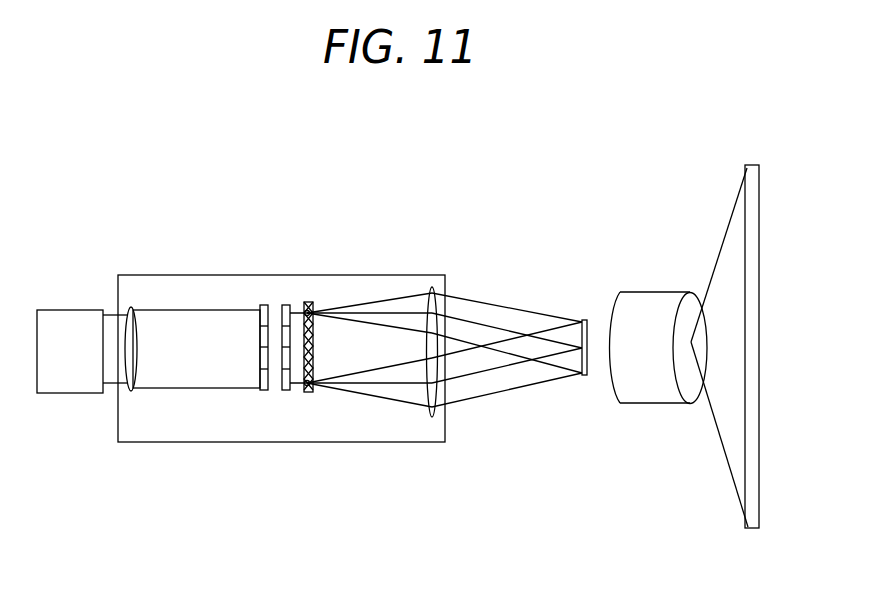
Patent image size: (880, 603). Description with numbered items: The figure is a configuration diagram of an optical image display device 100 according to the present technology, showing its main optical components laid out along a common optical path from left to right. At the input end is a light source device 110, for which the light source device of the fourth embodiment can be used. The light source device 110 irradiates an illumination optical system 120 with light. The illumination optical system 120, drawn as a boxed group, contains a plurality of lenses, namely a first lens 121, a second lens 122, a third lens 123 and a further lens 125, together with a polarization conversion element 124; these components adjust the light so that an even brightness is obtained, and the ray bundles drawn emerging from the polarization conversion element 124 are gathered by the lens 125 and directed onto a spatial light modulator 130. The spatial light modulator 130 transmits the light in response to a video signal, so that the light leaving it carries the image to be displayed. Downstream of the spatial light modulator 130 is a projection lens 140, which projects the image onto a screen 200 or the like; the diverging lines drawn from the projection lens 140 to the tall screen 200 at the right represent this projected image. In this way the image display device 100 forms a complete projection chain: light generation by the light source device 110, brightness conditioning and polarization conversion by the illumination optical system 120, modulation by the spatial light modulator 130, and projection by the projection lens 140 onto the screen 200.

The image display device 100 is at (96, 200).
The light source device 110 is at (63, 310).
The illumination optical system 120 is at (263, 275).
The lens 121 is at (132, 310).
The lens 122 is at (263, 307).
The lens 123 is at (292, 305).
The polarization conversion element 124 is at (305, 392).
The lens 125 is at (423, 407).
The spatial light modulator 130 is at (600, 304).
The projection lens 140 is at (630, 292).
The screen 200 is at (745, 520).